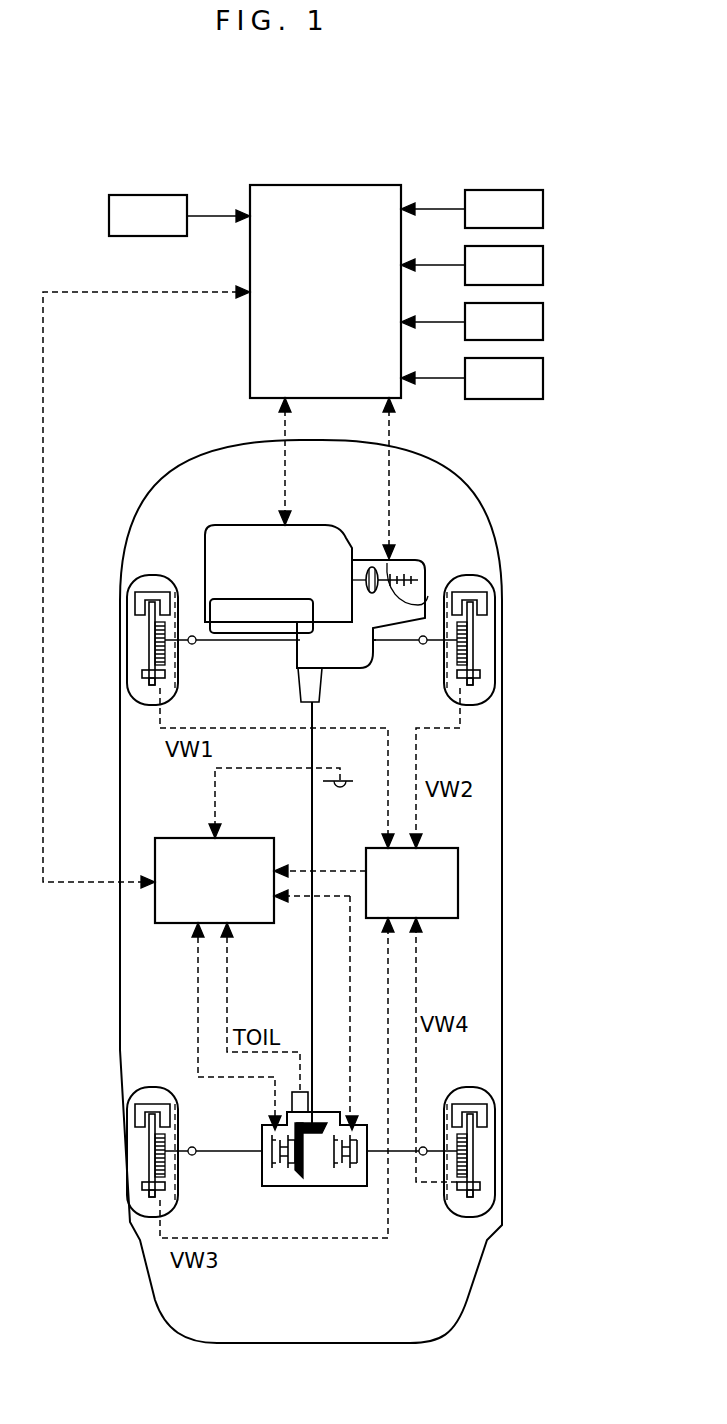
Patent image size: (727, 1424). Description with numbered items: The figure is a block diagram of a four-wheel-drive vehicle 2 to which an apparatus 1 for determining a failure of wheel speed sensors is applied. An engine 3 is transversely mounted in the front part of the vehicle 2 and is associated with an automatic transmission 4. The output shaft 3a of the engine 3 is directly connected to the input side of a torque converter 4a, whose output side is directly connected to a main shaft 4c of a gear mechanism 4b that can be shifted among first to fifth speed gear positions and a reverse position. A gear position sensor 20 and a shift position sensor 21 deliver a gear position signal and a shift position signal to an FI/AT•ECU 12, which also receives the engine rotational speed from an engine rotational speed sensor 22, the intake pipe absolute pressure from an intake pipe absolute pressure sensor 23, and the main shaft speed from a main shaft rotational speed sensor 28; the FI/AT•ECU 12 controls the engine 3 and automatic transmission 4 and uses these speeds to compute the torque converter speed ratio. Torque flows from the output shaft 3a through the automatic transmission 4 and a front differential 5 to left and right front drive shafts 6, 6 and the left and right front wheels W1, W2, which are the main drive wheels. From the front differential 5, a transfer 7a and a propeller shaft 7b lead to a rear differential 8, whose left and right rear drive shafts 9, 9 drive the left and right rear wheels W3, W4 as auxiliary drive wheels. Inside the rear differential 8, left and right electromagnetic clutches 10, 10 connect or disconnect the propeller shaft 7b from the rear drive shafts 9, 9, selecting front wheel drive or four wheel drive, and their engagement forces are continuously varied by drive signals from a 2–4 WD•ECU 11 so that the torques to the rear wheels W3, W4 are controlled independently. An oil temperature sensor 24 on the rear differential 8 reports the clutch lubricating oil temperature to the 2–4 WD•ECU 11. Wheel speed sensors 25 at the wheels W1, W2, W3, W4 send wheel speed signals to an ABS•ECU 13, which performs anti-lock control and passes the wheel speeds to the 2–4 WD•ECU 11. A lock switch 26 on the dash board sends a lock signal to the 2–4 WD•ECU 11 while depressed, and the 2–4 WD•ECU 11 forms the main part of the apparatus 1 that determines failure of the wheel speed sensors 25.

The apparatus for determining a failure of wheel speed sensors 1 is at (585, 962).
The four-wheel-drive vehicle 2 is at (502, 757).
The engine 3 is at (235, 525).
The output shaft 3a is at (363, 576).
The automatic transmission 4 is at (433, 556).
The torque converter 4a is at (382, 558).
The gear mechanism 4b is at (398, 572).
The main shaft 4c is at (428, 596).
The front differential 5 is at (330, 672).
The front drive shaft 6 is at (207, 642).
The transfer 7a is at (297, 680).
The propeller shaft 7b is at (311, 1000).
The rear differential 8 is at (322, 1186).
The rear drive shaft 9 is at (216, 1153).
The electromagnetic clutch 10 is at (284, 1170).
The 2–4 WD•ECU 11 is at (200, 838).
The FI/AT•ECU 12 is at (330, 185).
The ABS•ECU 13 is at (458, 886).
The gear position sensor 20 is at (543, 208).
The shift position sensor 21 is at (543, 265).
The engine rotational speed sensor 22 is at (543, 322).
The intake pipe absolute pressure sensor 23 is at (543, 378).
The oil temperature sensor 24 is at (305, 1092).
The wheel speed sensor 25 is at (142, 674).
The lock switch 26 is at (340, 790).
The main shaft rotational speed sensor 28 is at (173, 195).
The left front wheel W1 is at (132, 590).
The right front wheel W2 is at (491, 584).
The left rear wheel W3 is at (132, 1100).
The right rear wheel W4 is at (491, 1092).